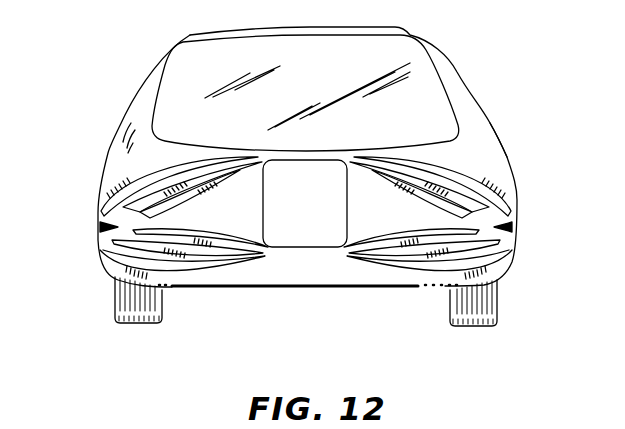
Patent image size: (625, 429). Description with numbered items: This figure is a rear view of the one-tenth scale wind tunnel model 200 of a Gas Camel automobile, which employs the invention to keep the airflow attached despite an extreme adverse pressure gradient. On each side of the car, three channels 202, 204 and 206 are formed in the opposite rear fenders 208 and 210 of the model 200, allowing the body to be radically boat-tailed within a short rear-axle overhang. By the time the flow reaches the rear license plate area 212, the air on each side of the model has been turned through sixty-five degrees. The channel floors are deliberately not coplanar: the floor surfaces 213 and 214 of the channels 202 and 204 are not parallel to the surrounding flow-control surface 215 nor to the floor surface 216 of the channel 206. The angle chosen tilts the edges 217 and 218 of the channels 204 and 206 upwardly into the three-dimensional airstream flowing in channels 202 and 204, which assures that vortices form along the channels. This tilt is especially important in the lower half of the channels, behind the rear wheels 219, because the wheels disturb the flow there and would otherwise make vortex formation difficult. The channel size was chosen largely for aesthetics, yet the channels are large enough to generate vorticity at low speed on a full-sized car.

The wind tunnel model 200 is at (457, 71).
The channel 202 is at (100, 227).
The channel 204 is at (130, 228).
The channel 206 is at (213, 224).
The rear fender 208 is at (104, 165).
The rear fender 210 is at (488, 150).
The rear license plate area 212 is at (322, 222).
The floor surface 213 is at (453, 300).
The floor surface 214 is at (458, 287).
The flow-control surface 215 is at (498, 300).
The floor surface 216 is at (382, 232).
The edge 217 is at (422, 232).
The edge 218 is at (418, 228).
The rear wheel 219 is at (130, 323).